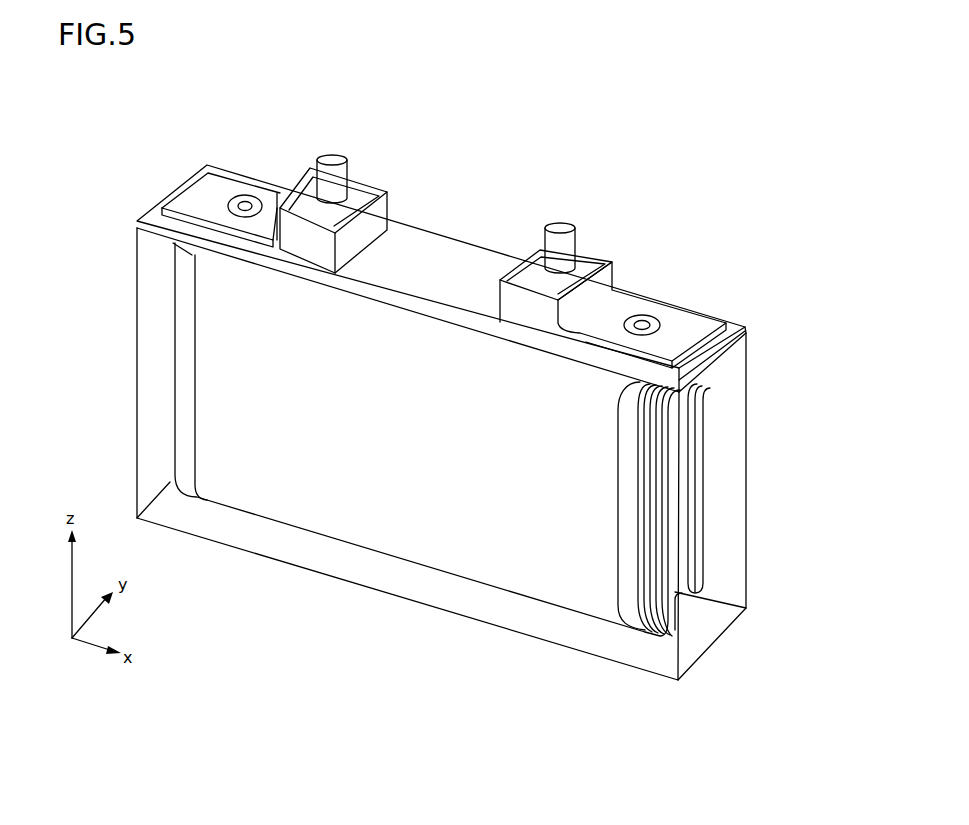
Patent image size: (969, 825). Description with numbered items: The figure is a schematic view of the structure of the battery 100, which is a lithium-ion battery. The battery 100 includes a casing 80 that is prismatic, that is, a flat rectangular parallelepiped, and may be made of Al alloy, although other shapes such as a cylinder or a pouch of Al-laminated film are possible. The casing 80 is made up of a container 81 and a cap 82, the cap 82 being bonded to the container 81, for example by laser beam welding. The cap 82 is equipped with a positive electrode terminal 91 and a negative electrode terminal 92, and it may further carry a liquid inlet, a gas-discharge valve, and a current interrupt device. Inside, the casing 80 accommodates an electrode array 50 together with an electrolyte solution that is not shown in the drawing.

The battery 100 is at (484, 153).
The negative electrode terminal 92 is at (330, 160).
The positive electrode terminal 91 is at (555, 223).
The cap 82 is at (745, 333).
The container 81 is at (747, 392).
The casing 80 is at (803, 315).
The electrode array 50 is at (390, 445).